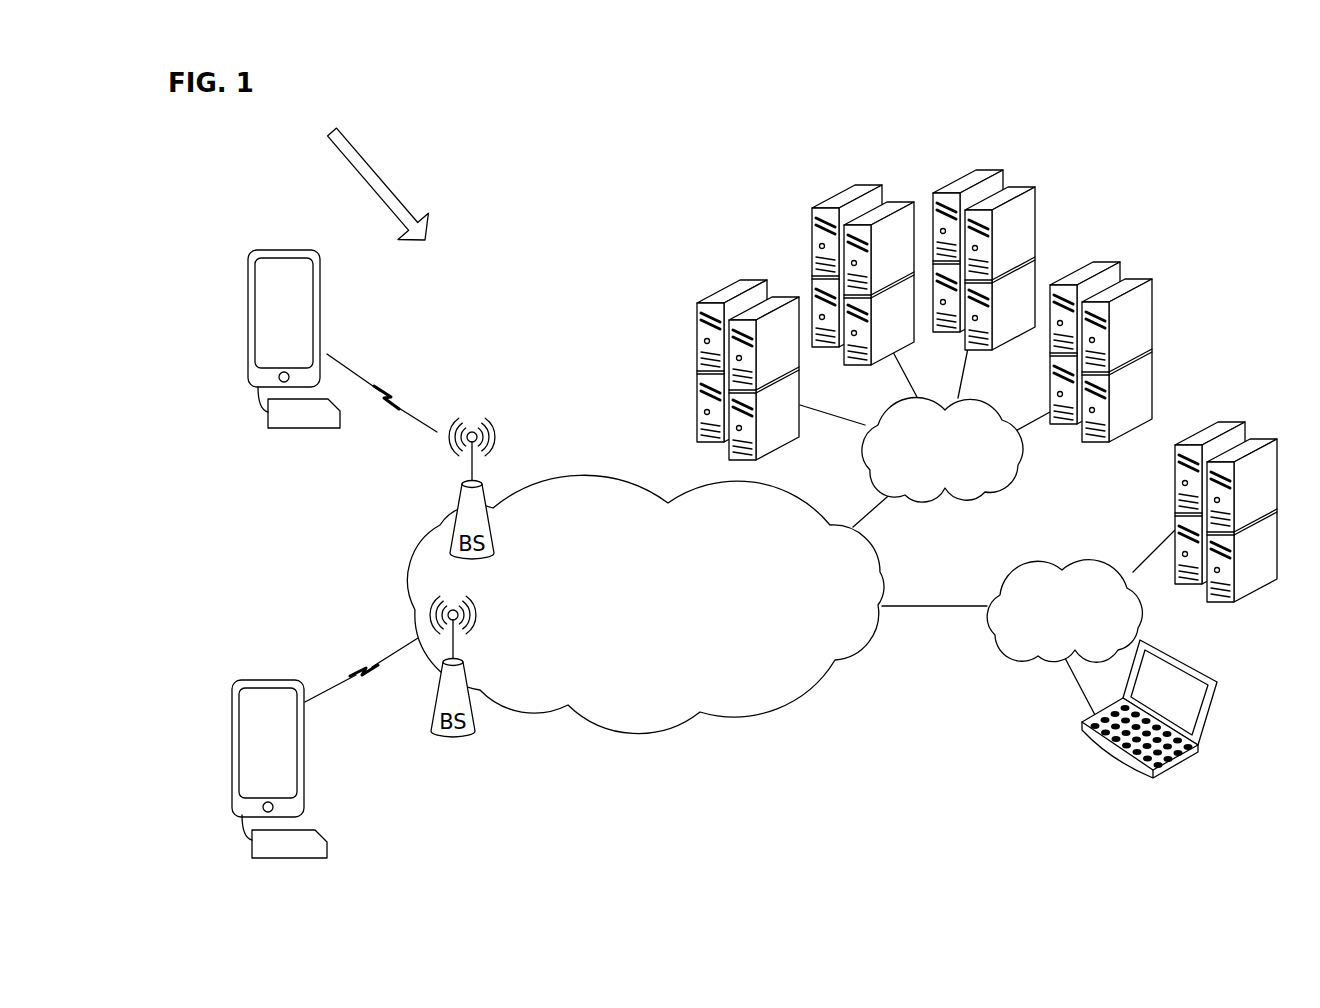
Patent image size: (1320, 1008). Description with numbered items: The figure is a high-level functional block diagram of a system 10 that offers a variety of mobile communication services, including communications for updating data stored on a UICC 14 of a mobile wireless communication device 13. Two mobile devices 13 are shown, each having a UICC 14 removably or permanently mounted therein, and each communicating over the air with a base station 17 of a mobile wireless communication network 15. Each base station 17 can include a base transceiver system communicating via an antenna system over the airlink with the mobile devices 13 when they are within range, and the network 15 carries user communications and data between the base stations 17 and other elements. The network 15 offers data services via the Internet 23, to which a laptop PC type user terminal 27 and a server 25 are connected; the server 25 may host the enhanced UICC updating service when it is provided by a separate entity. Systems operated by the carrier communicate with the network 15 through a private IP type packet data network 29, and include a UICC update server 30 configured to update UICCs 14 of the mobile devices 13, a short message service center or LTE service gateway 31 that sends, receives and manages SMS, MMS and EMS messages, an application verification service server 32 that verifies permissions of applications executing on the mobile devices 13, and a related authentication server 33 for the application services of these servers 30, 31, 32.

The system 10 is at (366, 174).
The mobile wireless communication device 13 is at (248, 297).
The UICC 14 is at (268, 425).
The mobile wireless communication network 15 is at (547, 483).
The base station 17 is at (458, 505).
The Internet 23 is at (1005, 648).
The server 25 is at (1175, 518).
The laptop PC type user terminal 27 is at (1105, 762).
The private IP type packet data network 29 is at (927, 498).
The UICC update server 30 is at (697, 316).
The short message service center 31 is at (812, 220).
The application verification service server 32 is at (1030, 190).
The authentication server 33 is at (1153, 348).